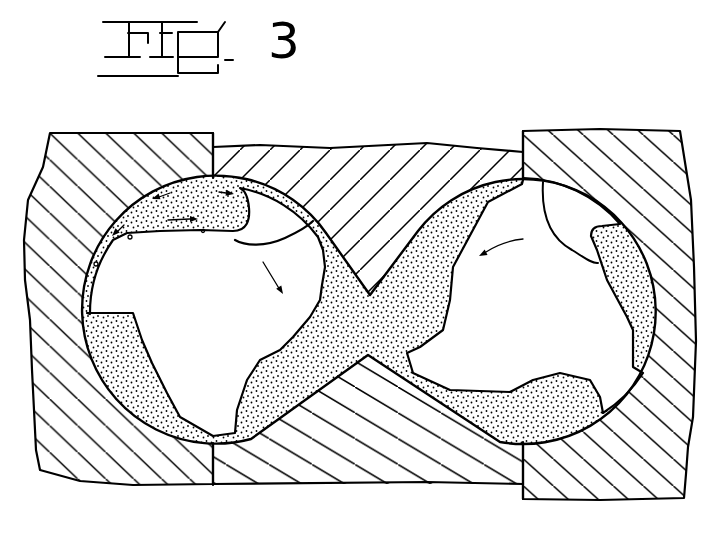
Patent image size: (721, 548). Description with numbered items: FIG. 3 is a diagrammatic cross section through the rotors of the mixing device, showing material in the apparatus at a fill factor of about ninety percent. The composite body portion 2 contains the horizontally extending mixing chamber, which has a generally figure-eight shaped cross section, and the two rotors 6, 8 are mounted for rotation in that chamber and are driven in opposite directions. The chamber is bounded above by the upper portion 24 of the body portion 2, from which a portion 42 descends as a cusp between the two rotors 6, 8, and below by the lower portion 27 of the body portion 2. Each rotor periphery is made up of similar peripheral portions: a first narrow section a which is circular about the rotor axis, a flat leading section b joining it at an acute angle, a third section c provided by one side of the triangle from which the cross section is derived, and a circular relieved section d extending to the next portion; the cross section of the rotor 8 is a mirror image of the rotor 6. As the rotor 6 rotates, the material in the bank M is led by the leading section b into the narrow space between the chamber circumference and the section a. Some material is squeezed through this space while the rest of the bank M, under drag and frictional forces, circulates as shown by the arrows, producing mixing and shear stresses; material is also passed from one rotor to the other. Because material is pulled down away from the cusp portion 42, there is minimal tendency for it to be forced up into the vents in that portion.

The composite body portion 2 is at (123, 462).
The rotor 6 is at (213, 358).
The rotor 8 is at (531, 343).
The upper portion 24 is at (478, 152).
The lower portion 27 is at (375, 469).
The cusp portion 42 is at (363, 280).
The bank of material M is at (217, 178).
The first narrow section a is at (96, 264).
The leading section b is at (130, 237).
The third section c is at (203, 231).
The circular relieved section d is at (252, 243).